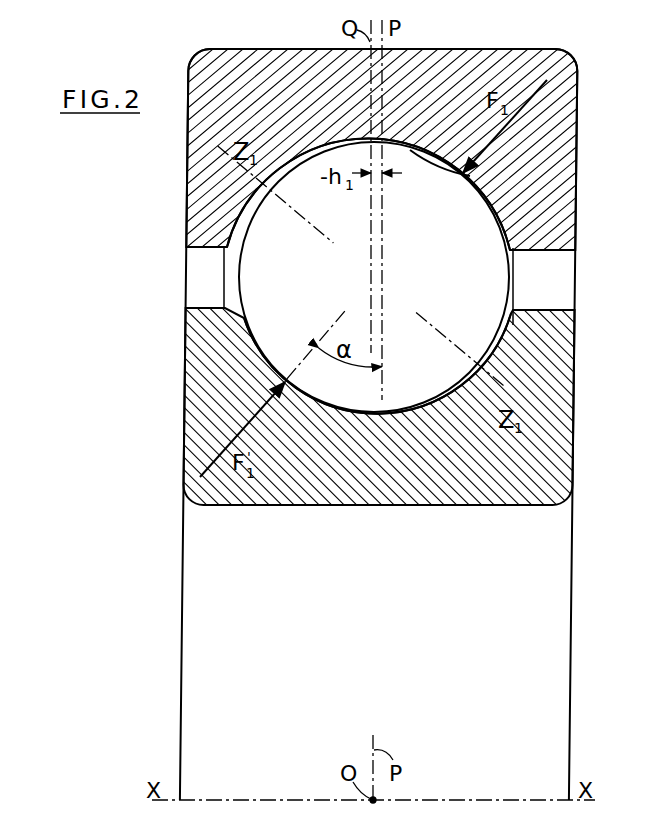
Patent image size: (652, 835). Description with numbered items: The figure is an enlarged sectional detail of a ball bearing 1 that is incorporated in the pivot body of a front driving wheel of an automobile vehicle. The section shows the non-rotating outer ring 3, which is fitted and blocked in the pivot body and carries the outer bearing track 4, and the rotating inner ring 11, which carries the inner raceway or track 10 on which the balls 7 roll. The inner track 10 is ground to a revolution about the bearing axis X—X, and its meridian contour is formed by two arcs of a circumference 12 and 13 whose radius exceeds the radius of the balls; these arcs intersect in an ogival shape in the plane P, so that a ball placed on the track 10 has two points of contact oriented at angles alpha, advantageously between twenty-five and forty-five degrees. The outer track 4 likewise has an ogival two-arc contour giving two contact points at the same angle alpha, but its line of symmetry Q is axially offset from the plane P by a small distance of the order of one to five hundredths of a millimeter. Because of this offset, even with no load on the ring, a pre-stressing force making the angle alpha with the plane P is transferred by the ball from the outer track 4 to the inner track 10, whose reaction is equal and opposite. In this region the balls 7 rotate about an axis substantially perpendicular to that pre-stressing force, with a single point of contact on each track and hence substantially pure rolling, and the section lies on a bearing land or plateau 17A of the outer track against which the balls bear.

The ball bearing 1 is at (178, 508).
The outer ring 3 is at (562, 188).
The outer bearing track 4 is at (240, 220).
The balls 7 is at (480, 252).
The inner raceway 10 is at (448, 393).
The inner ring 11 is at (553, 465).
The arc of a circumference 12 is at (246, 326).
The arc of a circumference 13 is at (503, 345).
The bearing land 17A is at (432, 155).